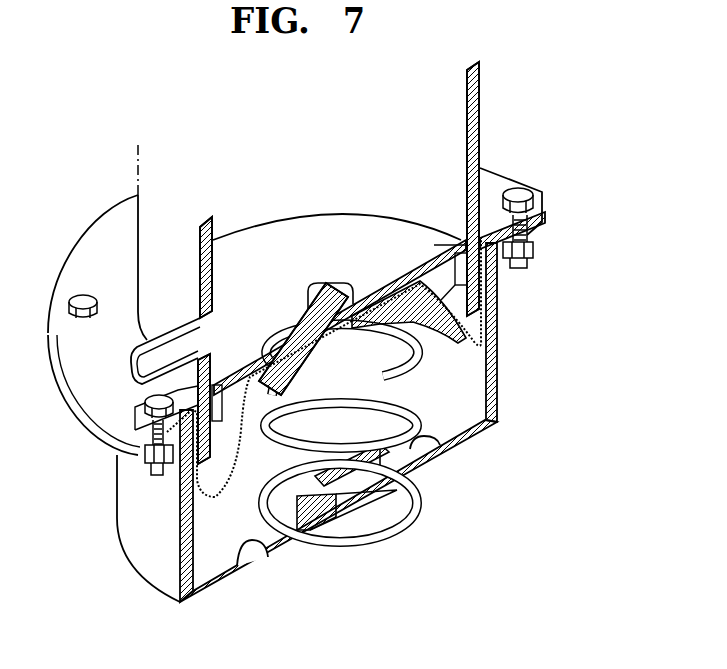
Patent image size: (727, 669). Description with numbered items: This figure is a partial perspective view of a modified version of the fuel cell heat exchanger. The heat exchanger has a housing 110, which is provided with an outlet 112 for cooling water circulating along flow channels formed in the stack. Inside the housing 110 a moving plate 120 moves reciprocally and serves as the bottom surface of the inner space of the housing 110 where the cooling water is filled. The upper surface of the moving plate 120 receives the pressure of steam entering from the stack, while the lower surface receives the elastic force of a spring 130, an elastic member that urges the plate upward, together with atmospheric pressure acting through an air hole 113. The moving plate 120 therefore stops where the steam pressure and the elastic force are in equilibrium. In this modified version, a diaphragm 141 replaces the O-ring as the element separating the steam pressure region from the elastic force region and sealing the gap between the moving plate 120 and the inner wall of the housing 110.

The housing 110 is at (480, 152).
The moving plate 120 is at (534, 240).
The outlet 112 is at (147, 366).
The air hole 113 is at (248, 552).
The spring 130 is at (383, 490).
The diaphragm 141 is at (498, 353).